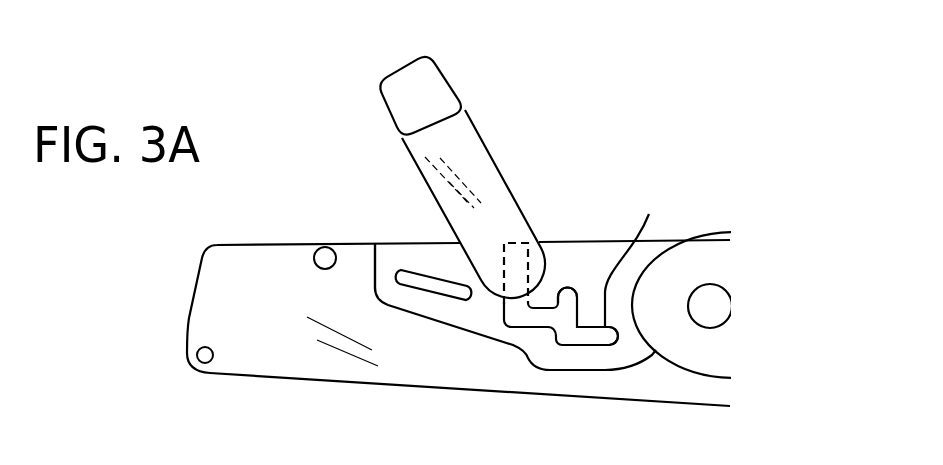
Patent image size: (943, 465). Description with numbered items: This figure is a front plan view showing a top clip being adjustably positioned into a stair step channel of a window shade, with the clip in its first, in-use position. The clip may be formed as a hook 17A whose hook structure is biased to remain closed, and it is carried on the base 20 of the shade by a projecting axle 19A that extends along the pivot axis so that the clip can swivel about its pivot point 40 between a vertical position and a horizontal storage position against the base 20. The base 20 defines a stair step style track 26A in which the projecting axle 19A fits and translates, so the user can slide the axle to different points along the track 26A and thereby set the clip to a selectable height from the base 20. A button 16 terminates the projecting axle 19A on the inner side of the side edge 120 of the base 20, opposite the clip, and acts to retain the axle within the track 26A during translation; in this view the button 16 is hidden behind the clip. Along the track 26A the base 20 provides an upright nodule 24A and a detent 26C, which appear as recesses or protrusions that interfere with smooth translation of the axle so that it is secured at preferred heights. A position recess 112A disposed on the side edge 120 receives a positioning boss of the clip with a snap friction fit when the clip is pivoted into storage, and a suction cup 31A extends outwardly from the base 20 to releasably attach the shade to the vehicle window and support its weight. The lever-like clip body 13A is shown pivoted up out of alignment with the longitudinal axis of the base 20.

The lever 13A is at (410, 60).
The hook 17A is at (447, 72).
The button 16 is at (563, 207).
The projecting axle 19A is at (568, 207).
The pivot point 40 is at (514, 268).
The position recess 112A is at (433, 275).
The side edge 120 is at (387, 257).
The upright nodule 24A is at (560, 302).
The detent 26C is at (587, 312).
The track 26A is at (518, 316).
The base 20 is at (184, 293).
The suction cup 31A is at (713, 362).